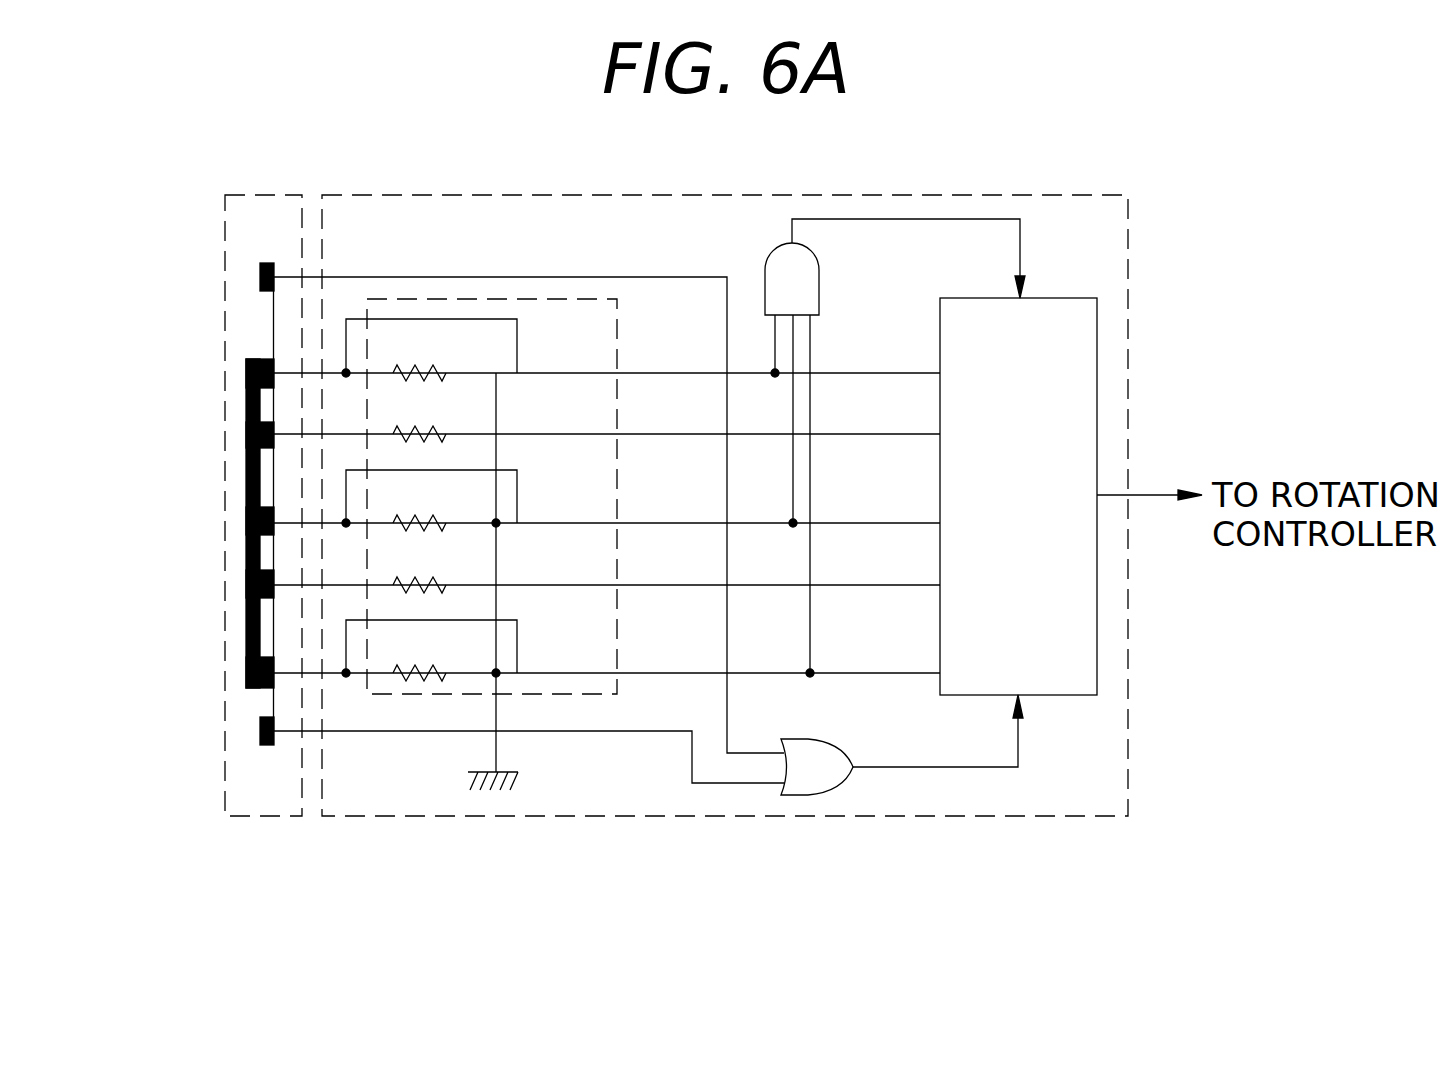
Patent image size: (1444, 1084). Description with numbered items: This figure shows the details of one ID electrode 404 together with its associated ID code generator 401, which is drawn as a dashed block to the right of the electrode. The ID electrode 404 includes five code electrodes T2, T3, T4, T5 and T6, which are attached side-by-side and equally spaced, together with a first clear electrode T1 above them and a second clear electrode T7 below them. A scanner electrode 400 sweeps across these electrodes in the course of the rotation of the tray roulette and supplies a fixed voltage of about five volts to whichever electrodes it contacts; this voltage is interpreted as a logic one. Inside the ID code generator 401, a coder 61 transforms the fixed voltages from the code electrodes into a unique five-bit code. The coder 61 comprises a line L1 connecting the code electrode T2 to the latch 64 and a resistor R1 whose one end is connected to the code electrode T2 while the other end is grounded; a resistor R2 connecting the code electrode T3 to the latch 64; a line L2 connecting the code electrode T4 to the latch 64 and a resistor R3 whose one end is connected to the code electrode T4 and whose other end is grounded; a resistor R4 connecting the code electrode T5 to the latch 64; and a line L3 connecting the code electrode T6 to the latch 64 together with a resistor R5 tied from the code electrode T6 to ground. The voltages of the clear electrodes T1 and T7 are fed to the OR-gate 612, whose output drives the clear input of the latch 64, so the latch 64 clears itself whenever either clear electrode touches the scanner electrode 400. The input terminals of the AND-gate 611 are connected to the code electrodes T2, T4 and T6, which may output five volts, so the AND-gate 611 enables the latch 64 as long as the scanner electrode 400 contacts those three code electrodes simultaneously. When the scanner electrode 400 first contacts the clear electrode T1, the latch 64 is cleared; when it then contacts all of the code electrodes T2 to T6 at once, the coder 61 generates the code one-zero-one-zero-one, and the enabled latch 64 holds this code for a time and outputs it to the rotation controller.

The ID code generator 401 is at (1130, 276).
The ID electrode 404 is at (226, 323).
The scanner electrode 400 is at (246, 468).
The first clear electrode T1 is at (260, 277).
The code electrode T2 is at (246, 373).
The code electrode T3 is at (246, 433).
The code electrode T4 is at (246, 523).
The code electrode T5 is at (246, 585).
The code electrode T6 is at (246, 673).
The second clear electrode T7 is at (260, 731).
The coder 61 is at (618, 331).
The resistor R1 is at (419, 355).
The resistor R2 is at (419, 415).
The resistor R3 is at (419, 503).
The resistor R4 is at (419, 564).
The resistor R5 is at (419, 653).
The line L1 is at (518, 352).
The line L2 is at (518, 505).
The line L3 is at (518, 655).
The AND-gate 611 is at (820, 291).
The OR-gate 612 is at (805, 796).
The latch 64 is at (1098, 400).